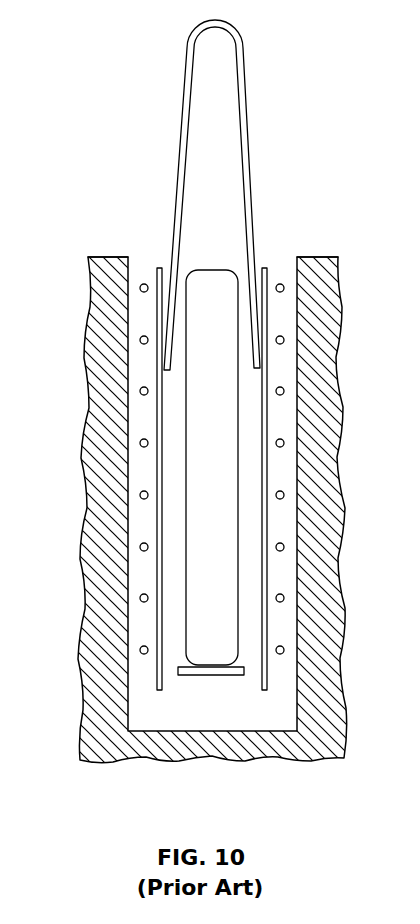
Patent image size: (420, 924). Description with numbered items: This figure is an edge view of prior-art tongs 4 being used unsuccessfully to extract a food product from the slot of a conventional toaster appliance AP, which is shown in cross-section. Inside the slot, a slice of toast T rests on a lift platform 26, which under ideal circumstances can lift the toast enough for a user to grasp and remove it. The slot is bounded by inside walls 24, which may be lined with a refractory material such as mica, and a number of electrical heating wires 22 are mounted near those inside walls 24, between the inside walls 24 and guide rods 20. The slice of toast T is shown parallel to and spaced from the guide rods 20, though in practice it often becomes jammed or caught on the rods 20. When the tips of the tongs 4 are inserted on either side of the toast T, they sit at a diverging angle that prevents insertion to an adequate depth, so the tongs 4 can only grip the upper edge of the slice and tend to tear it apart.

The tongs 4 is at (248, 97).
The slice of toast T is at (212, 270).
The guide rods 20 is at (268, 428).
The electrical heating wires 22 is at (285, 339).
The inside walls 24 is at (128, 268).
The lift platform 26 is at (227, 676).
The toaster appliance AP is at (320, 257).